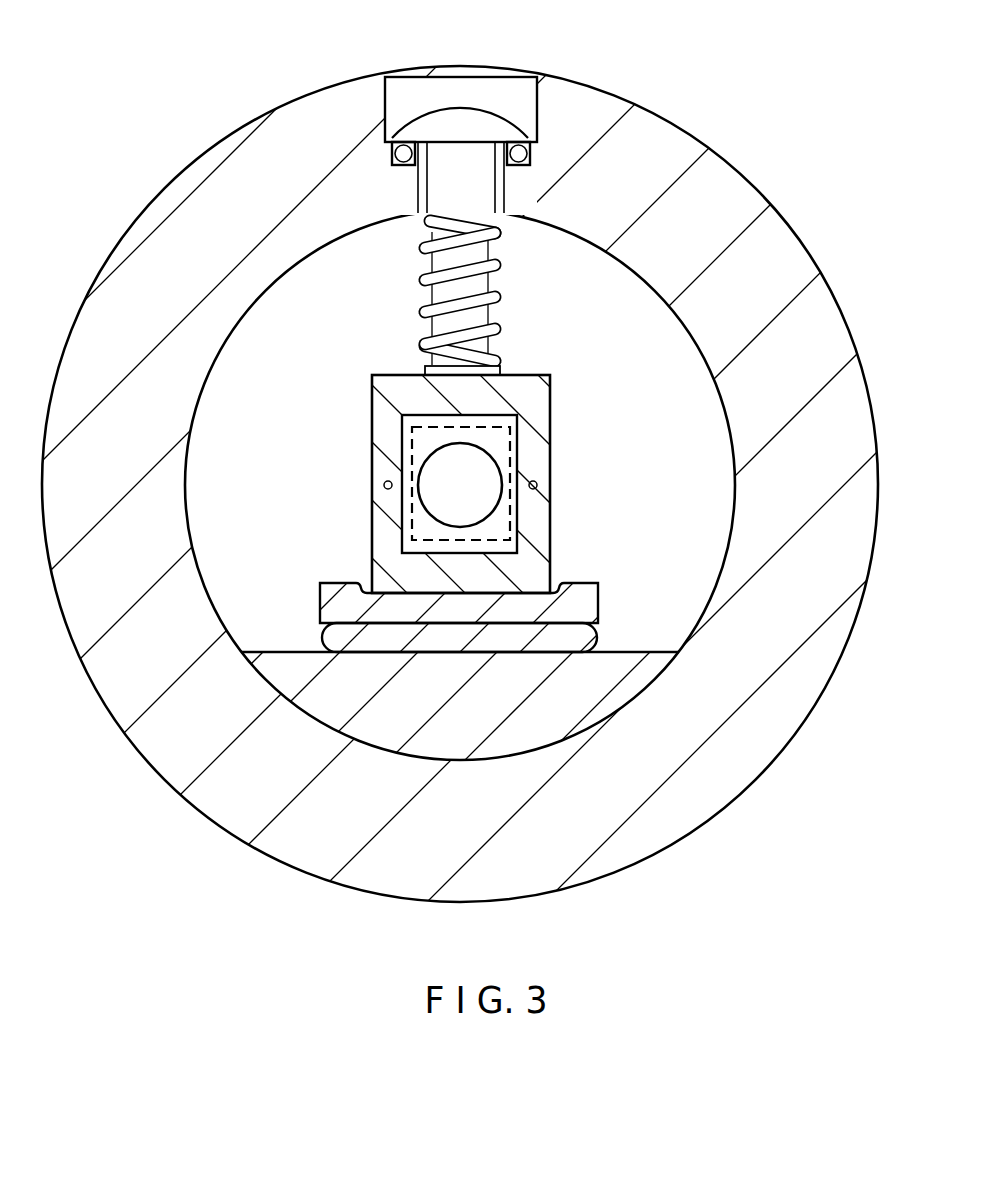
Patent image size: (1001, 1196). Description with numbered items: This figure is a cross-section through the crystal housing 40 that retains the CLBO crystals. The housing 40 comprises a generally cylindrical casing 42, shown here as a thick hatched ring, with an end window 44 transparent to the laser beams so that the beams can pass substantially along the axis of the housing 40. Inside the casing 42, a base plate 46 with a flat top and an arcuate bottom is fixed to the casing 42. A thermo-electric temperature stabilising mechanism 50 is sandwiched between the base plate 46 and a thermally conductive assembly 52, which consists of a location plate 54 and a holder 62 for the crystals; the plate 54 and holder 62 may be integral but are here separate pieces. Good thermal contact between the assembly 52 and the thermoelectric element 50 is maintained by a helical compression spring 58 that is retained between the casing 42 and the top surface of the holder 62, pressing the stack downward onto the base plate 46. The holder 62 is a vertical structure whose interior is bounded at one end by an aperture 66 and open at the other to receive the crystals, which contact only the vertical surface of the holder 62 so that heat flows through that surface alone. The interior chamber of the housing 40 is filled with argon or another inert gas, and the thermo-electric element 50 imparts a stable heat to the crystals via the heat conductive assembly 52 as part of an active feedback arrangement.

The housing 40 is at (274, 107).
The casing 42 is at (200, 210).
The end window 44 is at (652, 366).
The base plate 46 is at (332, 678).
The thermo-electric temperature stabilising mechanism 50 is at (567, 642).
The thermally conductive assembly 52 is at (463, 475).
The location plate 54 is at (598, 585).
The helical compression spring 58 is at (503, 330).
The holder 62 is at (550, 458).
The aperture 66 is at (462, 485).